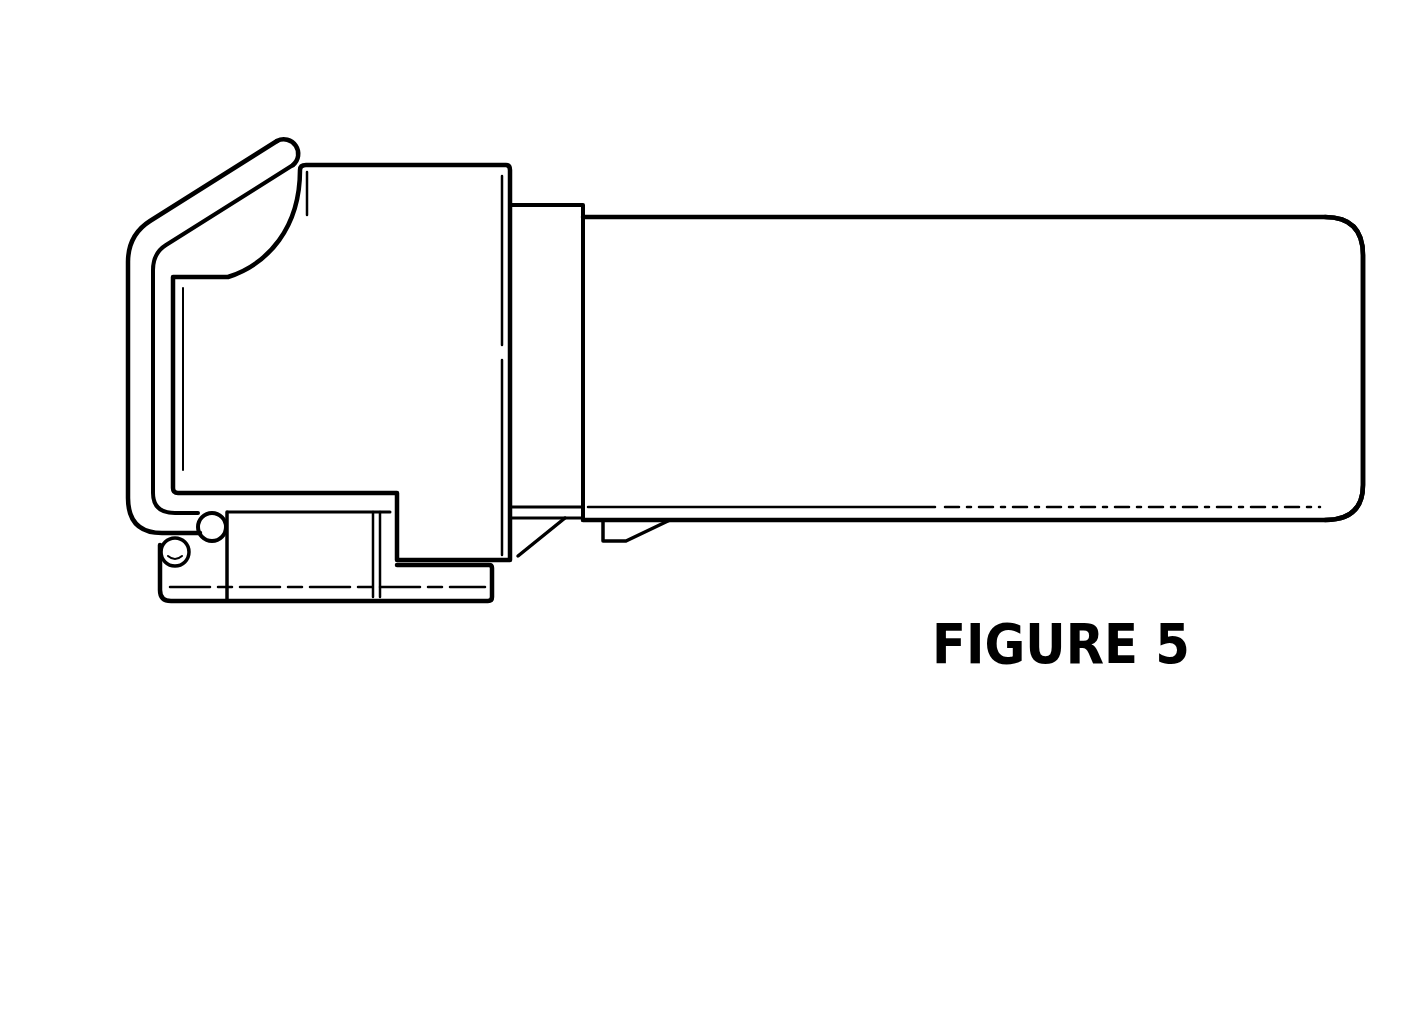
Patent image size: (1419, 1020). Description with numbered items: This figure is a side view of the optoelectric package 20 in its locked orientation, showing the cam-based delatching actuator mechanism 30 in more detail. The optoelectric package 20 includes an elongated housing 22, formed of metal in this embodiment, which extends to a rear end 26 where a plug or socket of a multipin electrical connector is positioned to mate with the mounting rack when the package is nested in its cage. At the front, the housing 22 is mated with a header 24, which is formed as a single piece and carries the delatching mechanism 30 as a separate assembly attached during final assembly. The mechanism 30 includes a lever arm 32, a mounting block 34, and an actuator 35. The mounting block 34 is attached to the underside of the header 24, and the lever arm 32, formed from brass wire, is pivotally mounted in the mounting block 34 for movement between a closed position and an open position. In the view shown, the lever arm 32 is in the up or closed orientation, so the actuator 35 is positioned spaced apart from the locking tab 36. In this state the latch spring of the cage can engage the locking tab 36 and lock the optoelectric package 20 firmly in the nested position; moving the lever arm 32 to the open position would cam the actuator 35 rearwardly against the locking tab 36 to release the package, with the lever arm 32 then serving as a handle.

The optoelectric package 20 is at (1058, 125).
The elongated housing 22 is at (1047, 217).
The header 24 is at (453, 163).
The rear end 26 is at (1367, 273).
The cam-based delatching actuator mechanism 30 is at (422, 423).
The lever arm 32 is at (287, 141).
The mounting block 34 is at (290, 570).
The actuator 35 is at (518, 556).
The locking tab 36 is at (628, 541).